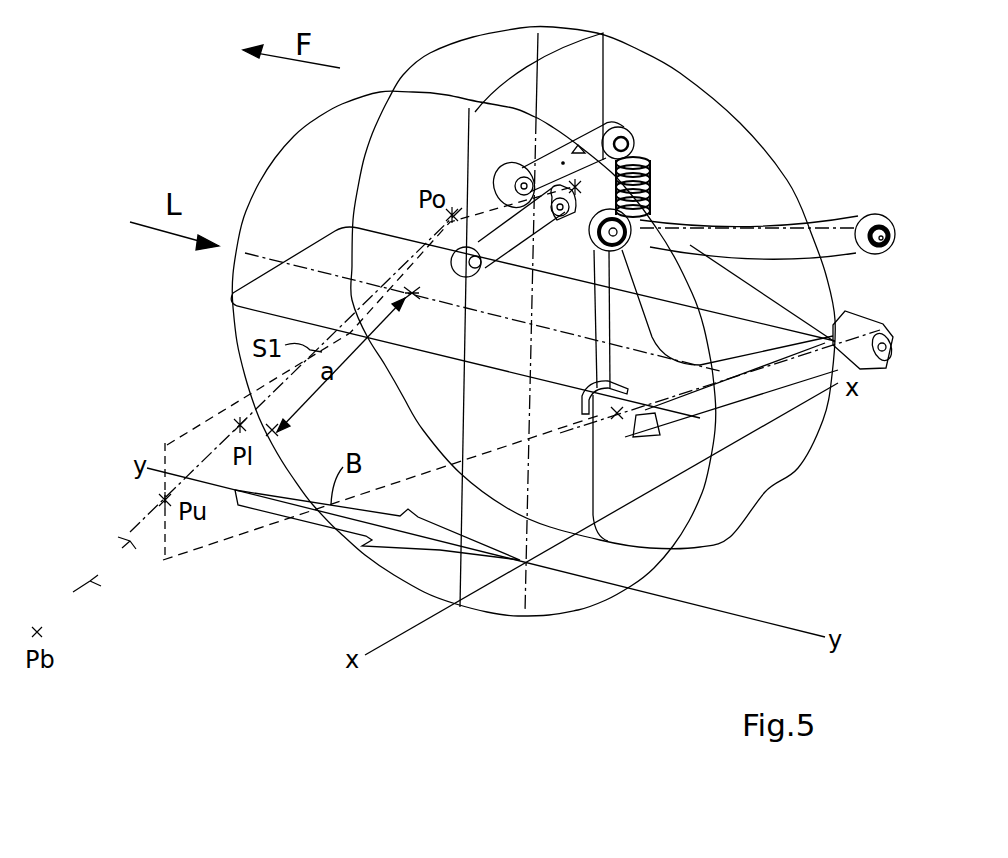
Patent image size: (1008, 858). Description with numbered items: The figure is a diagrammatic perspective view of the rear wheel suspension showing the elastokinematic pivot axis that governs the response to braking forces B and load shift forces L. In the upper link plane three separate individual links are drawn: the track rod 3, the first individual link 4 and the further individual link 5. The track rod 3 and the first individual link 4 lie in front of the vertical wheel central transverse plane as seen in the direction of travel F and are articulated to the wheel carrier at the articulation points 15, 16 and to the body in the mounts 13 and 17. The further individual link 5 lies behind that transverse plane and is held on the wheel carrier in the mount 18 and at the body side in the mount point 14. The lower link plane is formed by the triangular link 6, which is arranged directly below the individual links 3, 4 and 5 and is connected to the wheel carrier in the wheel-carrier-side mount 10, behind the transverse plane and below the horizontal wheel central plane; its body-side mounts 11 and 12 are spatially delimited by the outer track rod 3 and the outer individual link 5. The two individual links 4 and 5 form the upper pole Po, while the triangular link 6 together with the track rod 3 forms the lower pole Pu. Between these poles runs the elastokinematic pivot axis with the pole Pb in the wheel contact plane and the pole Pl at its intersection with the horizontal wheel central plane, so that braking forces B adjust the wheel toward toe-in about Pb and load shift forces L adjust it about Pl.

The track rod 3 is at (505, 252).
The first individual link 4 is at (574, 145).
The further individual link 5 is at (772, 253).
The triangular link 6 is at (755, 395).
The wheel-carrier-side mount 10 is at (617, 420).
The body-side mount 11 is at (655, 222).
The body-side mount 12 is at (870, 323).
The body-side mount 13 is at (562, 223).
The body-side mount point 14 is at (882, 215).
The articulation point 15 is at (440, 302).
The articulation point 16 is at (511, 170).
The body-side mount 17 is at (627, 143).
The wheel-carrier mount 18 is at (597, 267).